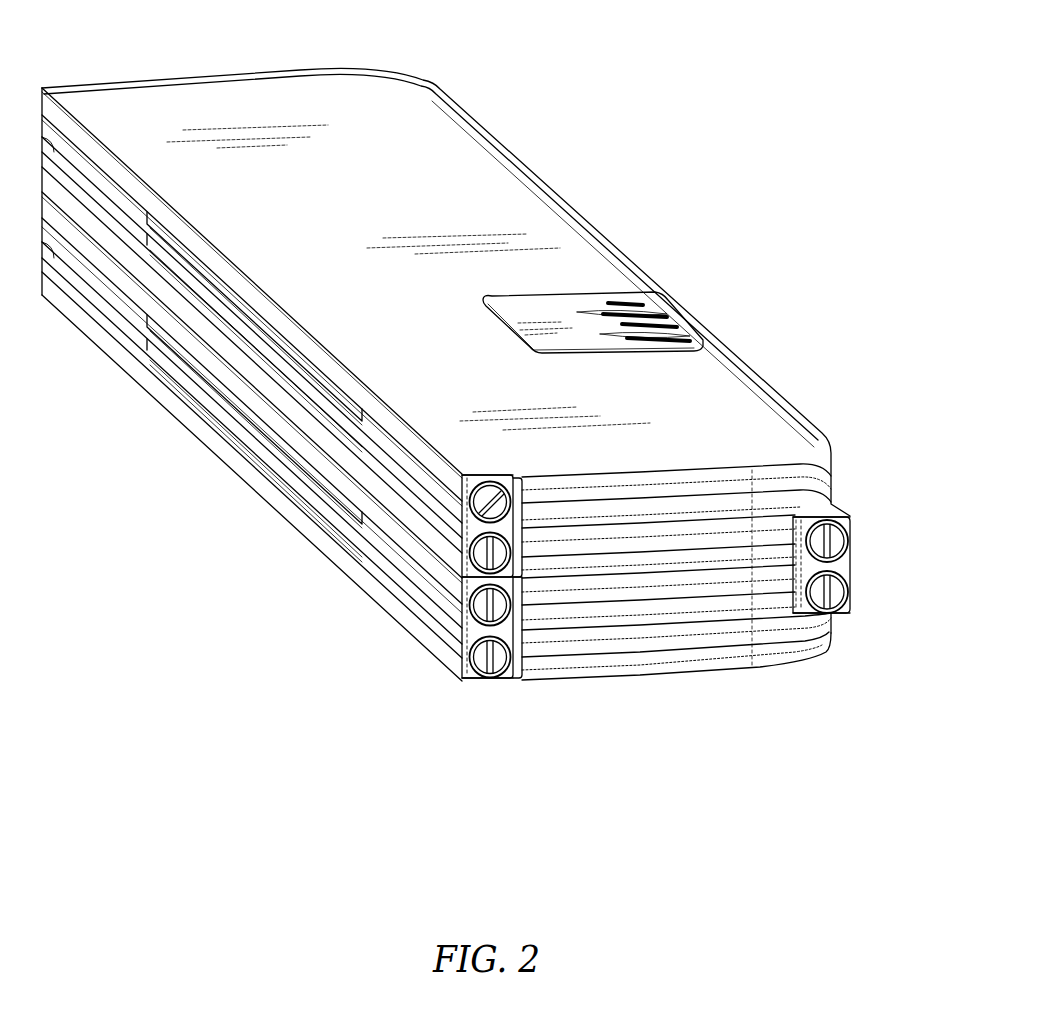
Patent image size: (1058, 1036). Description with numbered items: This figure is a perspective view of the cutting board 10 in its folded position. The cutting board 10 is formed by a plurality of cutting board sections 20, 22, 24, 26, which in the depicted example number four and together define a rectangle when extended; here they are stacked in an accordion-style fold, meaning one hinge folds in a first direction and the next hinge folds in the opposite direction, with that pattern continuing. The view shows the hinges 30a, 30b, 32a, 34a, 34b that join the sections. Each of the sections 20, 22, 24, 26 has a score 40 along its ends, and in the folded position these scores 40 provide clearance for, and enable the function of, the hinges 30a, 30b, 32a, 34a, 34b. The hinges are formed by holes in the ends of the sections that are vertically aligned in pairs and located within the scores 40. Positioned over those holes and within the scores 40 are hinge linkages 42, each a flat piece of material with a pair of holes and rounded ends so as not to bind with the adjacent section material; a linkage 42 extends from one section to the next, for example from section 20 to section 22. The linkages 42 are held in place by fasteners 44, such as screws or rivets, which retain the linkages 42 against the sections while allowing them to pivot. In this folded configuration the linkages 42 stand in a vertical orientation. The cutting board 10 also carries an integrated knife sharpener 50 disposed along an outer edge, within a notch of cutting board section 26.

The cutting board 10 is at (623, 83).
The cutting board section 20 is at (675, 660).
The cutting board section 22 is at (765, 605).
The cutting board section 24 is at (765, 540).
The cutting board section 26 is at (722, 405).
The hinge 30a is at (445, 644).
The hinge 30b is at (31, 253).
The hinge 32a is at (868, 550).
The hinge 34a is at (445, 537).
The hinge 34b is at (29, 128).
The score 40 is at (484, 464).
The hinge linkage 42 is at (517, 522).
The fastener 44 is at (480, 500).
The knife sharpener 50 is at (712, 290).